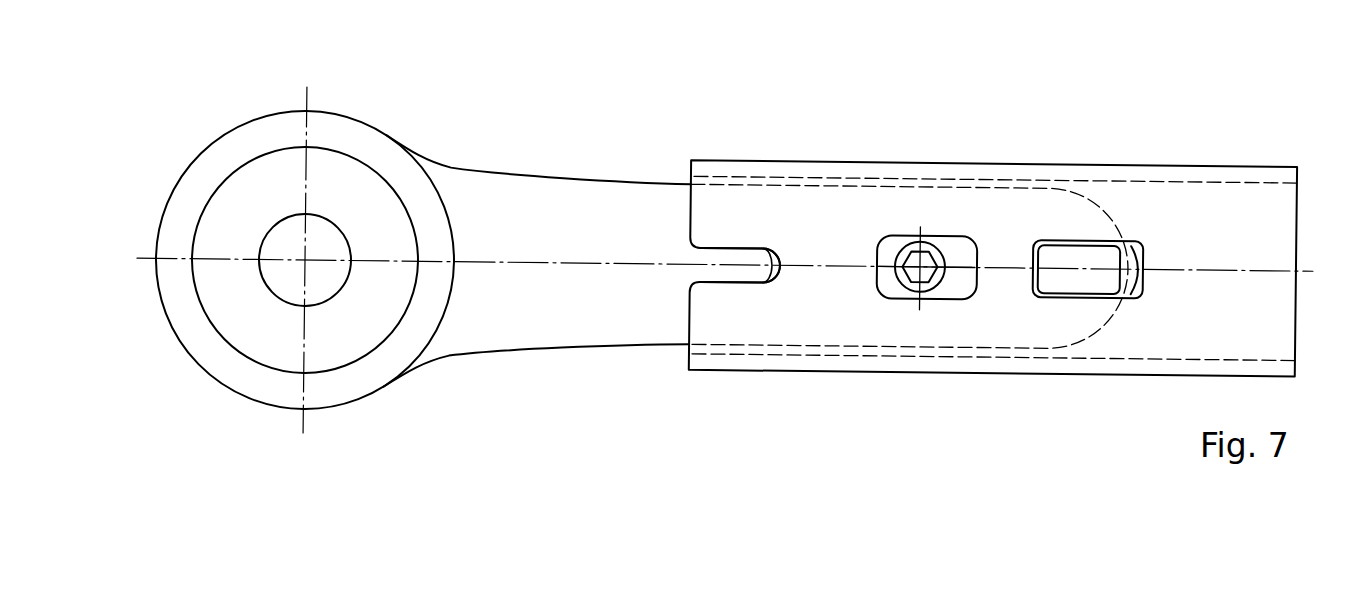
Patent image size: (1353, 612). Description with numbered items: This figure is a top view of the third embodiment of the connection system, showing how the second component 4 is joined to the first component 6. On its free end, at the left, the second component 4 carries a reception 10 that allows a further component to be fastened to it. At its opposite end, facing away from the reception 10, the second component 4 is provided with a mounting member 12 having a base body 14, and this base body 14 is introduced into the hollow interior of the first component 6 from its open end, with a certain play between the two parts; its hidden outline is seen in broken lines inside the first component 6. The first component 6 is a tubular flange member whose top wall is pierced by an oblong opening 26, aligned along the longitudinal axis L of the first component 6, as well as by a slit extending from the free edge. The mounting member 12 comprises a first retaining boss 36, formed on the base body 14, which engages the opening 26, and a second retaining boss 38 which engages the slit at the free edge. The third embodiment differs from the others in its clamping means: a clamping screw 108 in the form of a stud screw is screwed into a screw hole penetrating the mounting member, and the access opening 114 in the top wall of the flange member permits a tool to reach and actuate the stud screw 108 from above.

The second component 4 is at (460, 130).
The first component 6 is at (1302, 148).
The reception 10 is at (197, 178).
The mounting member 12 is at (909, 336).
The base body 14 is at (1028, 337).
The opening 26 is at (1130, 258).
The first retaining boss 36 is at (1068, 260).
The second retaining boss 38 is at (732, 267).
The clamping screw 108 is at (913, 260).
The access opening 114 is at (959, 252).
The longitudinal axis L is at (652, 265).